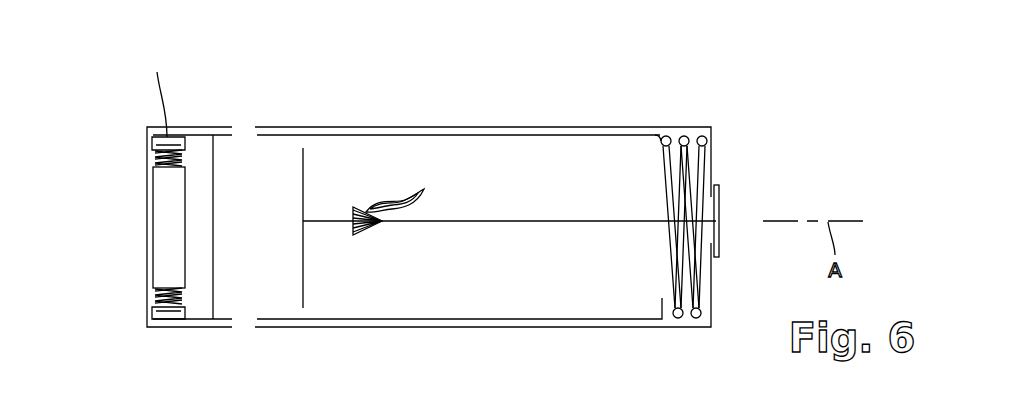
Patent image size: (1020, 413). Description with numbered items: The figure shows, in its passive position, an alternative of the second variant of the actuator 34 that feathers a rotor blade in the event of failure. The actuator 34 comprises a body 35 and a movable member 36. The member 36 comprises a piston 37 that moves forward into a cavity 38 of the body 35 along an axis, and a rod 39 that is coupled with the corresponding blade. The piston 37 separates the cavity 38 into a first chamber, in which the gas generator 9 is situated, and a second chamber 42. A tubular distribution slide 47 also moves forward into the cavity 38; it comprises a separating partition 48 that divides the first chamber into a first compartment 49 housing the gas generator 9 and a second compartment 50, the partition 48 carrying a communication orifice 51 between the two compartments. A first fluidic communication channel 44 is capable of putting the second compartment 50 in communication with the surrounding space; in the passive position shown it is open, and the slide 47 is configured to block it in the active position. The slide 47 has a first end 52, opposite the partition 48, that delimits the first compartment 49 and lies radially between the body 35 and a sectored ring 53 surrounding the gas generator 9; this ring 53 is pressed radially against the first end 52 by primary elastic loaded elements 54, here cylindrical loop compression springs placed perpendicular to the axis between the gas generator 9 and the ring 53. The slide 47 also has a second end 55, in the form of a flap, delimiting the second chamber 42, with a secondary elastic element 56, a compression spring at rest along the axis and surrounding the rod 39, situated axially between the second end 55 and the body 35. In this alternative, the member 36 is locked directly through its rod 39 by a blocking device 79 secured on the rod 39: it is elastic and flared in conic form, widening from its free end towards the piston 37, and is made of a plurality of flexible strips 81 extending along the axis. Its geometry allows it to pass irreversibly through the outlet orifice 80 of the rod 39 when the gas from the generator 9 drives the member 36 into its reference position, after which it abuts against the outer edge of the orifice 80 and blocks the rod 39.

The gas generator 9 is at (167, 241).
The actuator 34 is at (514, 111).
The body 35 is at (218, 123).
The movable member 36 is at (466, 216).
The piston 37 is at (303, 165).
The cavity 38 is at (349, 166).
The rod 39 is at (568, 220).
The second chamber 42 is at (487, 260).
The first fluidic communication channel 44 is at (242, 138).
The tubular distribution slide 47 is at (270, 134).
The separating partition 48 is at (213, 199).
The first compartment 49 is at (198, 270).
The second compartment 50 is at (264, 285).
The communication orifice 51 is at (212, 225).
The first end 52 is at (156, 93).
The sectored ring 53 is at (152, 141).
The primary elastic loaded element 54 is at (152, 158).
The second end 55 is at (662, 147).
The secondary elastic element 56 is at (700, 153).
The blocking device 79 is at (374, 238).
The outlet orifice 80 is at (720, 217).
The flexible strips 81 is at (411, 193).